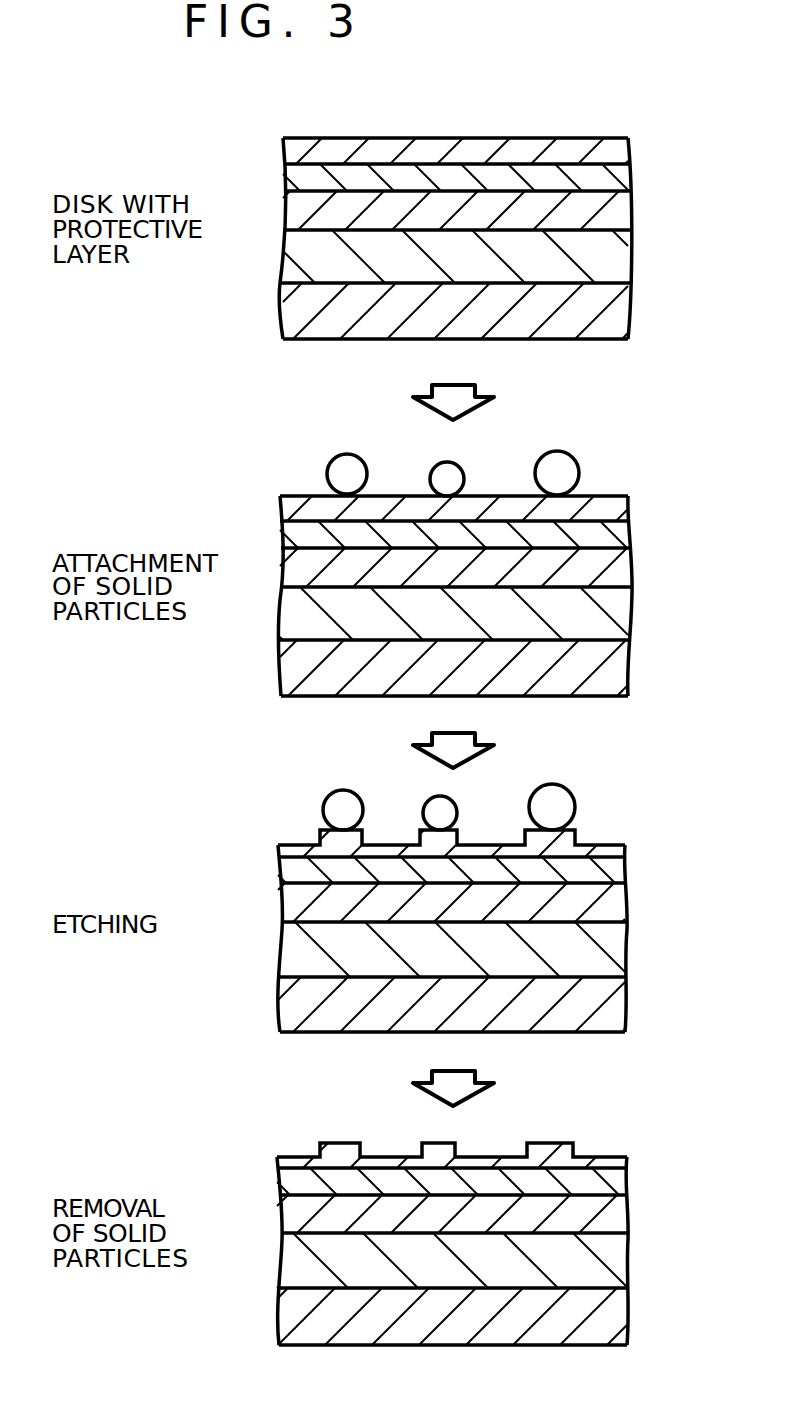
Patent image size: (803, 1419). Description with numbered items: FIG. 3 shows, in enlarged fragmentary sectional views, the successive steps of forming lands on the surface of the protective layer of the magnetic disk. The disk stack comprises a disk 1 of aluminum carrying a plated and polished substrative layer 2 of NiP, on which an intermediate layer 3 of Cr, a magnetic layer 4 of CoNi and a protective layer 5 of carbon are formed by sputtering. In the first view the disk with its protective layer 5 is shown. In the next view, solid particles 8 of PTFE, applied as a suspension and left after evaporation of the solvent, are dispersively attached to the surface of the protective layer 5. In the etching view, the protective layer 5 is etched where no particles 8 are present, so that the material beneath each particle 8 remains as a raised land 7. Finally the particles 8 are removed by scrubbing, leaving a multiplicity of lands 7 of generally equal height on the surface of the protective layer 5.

The disk 1 is at (620, 313).
The substrative layer 2 is at (623, 257).
The intermediate layer 3 is at (620, 217).
The magnetic layer 4 is at (620, 182).
The protective layer 5 is at (618, 153).
The lands 7 is at (568, 838).
The solid particles 8 is at (570, 472).